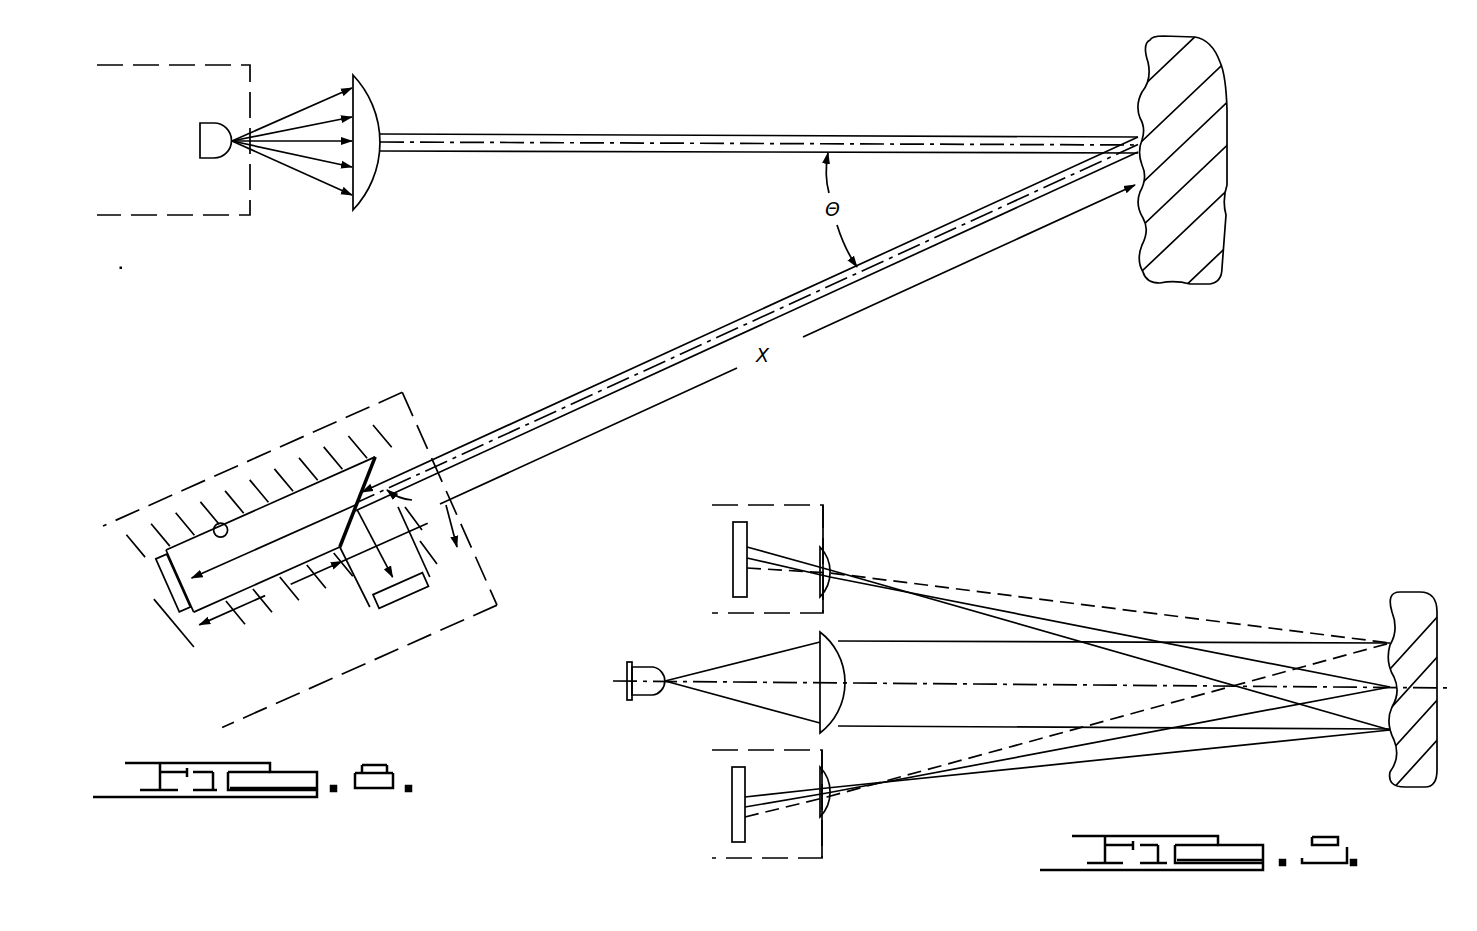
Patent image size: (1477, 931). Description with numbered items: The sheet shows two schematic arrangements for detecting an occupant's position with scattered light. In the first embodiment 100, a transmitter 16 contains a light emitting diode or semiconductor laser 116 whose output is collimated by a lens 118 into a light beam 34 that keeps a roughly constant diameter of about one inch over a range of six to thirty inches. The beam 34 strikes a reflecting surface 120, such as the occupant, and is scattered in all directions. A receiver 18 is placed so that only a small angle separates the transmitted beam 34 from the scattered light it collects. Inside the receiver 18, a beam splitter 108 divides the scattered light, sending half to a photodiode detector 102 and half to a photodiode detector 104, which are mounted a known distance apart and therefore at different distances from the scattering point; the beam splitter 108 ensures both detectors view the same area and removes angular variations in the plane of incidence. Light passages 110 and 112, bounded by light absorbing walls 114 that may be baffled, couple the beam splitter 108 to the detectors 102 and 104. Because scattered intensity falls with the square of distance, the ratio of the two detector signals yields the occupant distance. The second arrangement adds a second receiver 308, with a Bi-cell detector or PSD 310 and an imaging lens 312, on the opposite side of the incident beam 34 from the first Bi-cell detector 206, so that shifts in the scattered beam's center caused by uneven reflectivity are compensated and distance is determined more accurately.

In FIG. 2, the first embodiment 100 is at (1276, 120).
In FIG. 2, the transmitter 16 is at (258, 76).
In FIG. 2, the light emitting diode or semiconductor laser 116 is at (196, 140).
In FIG. 5, the light emitting diode or semiconductor laser 116 is at (649, 664).
In FIG. 2, the lens 118 is at (380, 92).
In FIG. 2, the light beam 34 is at (729, 130).
In FIG. 5, the light beam 34 is at (993, 729).
In FIG. 2, the reflecting surface 120 is at (1138, 78).
In FIG. 5, the reflecting surface 120 is at (1388, 622).
In FIG. 2, the receiver 18 is at (412, 407).
In FIG. 5, the receiver 18 is at (832, 521).
In FIG. 2, the light passage 110 is at (283, 513).
In FIG. 2, the beam splitter 108 is at (358, 481).
In FIG. 2, the light absorbing walls 114 is at (215, 526).
In FIG. 2, the photodiode detector 104 is at (162, 552).
In FIG. 2, the light passage 112 is at (356, 572).
In FIG. 2, the photodiode detector 102 is at (392, 605).
In FIG. 5, the first Bi-cell detector 206 is at (730, 567).
In FIG. 5, the Bi-cell detector or PSD 310 is at (730, 790).
In FIG. 5, the imaging lens 312 is at (835, 812).
In FIG. 5, the second receiver 308 is at (829, 852).